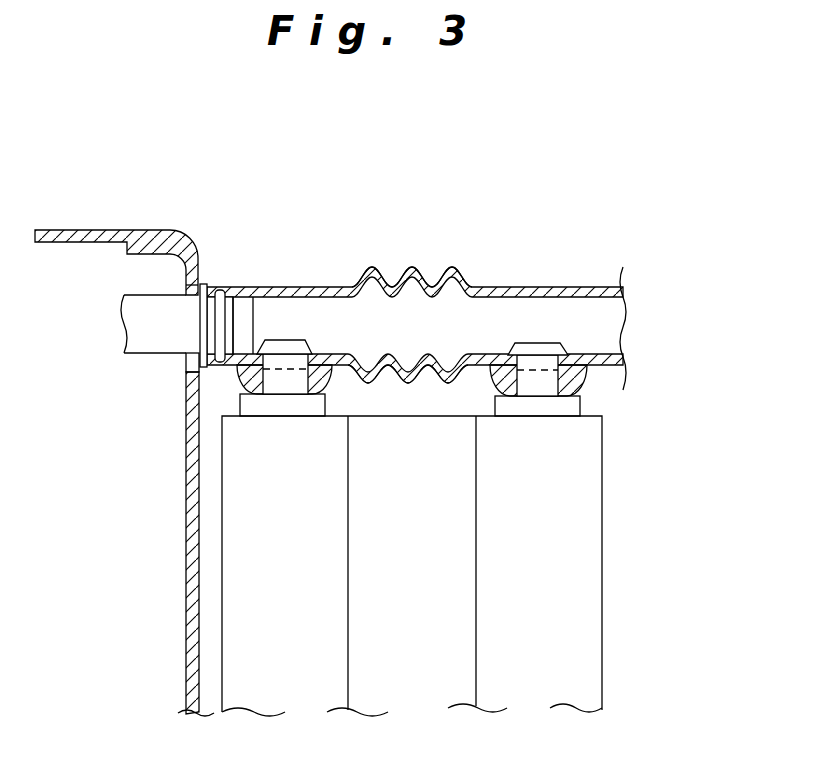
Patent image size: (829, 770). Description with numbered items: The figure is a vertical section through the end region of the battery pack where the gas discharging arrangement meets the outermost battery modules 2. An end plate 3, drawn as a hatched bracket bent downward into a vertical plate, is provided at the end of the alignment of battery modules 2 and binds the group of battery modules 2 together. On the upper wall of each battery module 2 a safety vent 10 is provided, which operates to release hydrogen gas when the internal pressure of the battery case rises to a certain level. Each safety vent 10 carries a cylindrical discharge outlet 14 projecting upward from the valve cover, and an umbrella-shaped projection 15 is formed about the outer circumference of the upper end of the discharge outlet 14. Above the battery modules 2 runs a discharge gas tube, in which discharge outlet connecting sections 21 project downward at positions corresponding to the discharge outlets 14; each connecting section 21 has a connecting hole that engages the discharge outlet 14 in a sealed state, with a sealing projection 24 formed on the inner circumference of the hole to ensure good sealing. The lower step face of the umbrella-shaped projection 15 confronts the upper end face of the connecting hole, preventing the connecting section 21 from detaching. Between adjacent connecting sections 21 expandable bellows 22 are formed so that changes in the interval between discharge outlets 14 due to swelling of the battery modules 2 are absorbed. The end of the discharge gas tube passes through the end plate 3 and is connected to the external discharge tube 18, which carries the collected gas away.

The battery module 2 is at (257, 551).
The end plate 3 is at (88, 240).
The safety vent 10 is at (282, 410).
The discharge outlet 14 is at (263, 396).
The umbrella-shaped projection 15 is at (283, 350).
The external discharge tube 18 is at (145, 335).
The discharge outlet connecting section 21 is at (325, 372).
The expandable bellows 22 is at (412, 268).
The sealing projection 24 is at (272, 372).